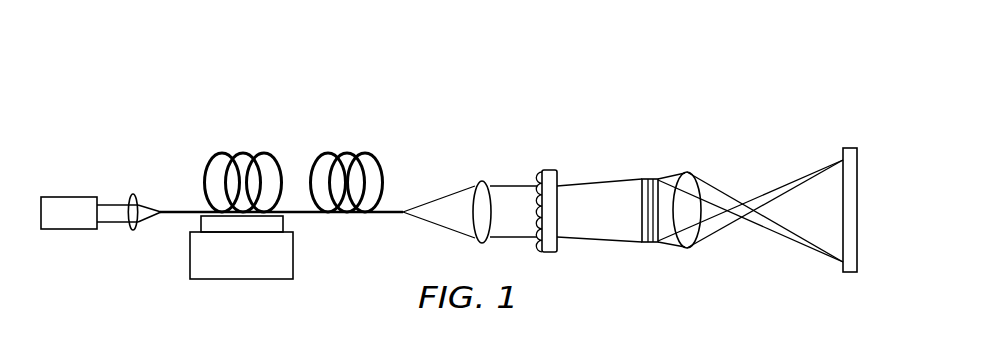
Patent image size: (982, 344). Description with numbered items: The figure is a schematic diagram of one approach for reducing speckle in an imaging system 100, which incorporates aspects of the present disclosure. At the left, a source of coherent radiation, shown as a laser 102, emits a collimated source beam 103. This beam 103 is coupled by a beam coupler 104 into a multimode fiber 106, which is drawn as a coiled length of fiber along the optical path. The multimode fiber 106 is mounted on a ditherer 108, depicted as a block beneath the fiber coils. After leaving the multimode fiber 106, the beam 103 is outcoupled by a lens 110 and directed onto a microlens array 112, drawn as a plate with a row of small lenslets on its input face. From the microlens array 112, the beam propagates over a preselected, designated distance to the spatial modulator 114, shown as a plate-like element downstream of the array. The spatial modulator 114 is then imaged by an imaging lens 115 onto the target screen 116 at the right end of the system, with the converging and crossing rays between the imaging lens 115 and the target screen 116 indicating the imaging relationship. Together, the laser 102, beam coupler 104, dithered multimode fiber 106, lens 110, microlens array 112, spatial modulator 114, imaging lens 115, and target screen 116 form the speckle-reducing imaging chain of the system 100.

The imaging system 100 is at (588, 70).
The laser 102 is at (67, 195).
The collimated source beam 103 is at (117, 222).
The beam coupler 104 is at (133, 196).
The multimode fiber 106 is at (327, 153).
The ditherer 108 is at (238, 280).
The lens 110 is at (482, 177).
The microlens array 112 is at (548, 168).
The spatial modulator 114 is at (653, 178).
The imaging lens 115 is at (687, 250).
The target screen 116 is at (852, 148).